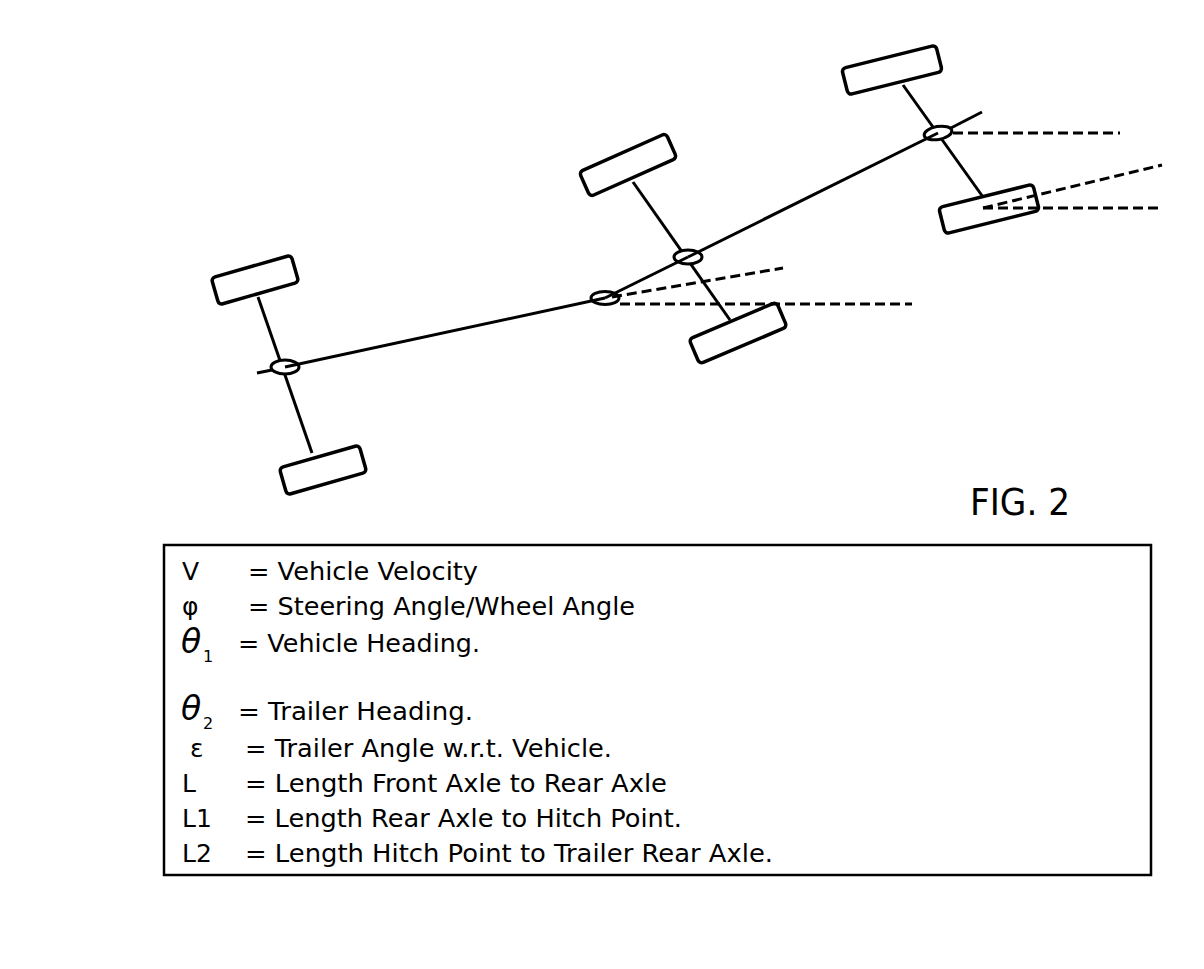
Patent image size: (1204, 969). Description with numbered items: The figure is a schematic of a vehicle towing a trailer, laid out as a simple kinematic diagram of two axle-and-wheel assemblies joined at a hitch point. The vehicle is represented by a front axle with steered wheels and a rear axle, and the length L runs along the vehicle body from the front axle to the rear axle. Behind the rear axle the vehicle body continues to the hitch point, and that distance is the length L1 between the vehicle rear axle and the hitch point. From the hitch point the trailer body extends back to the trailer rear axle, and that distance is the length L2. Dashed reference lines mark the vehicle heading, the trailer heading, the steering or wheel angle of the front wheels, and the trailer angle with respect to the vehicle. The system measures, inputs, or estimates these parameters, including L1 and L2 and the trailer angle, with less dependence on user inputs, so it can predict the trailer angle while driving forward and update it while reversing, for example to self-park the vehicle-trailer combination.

The length front axle to rear axle L is at (813, 195).
The length rear axle to hitch point L1 is at (640, 266).
The length hitch point to trailer rear axle L2 is at (445, 343).